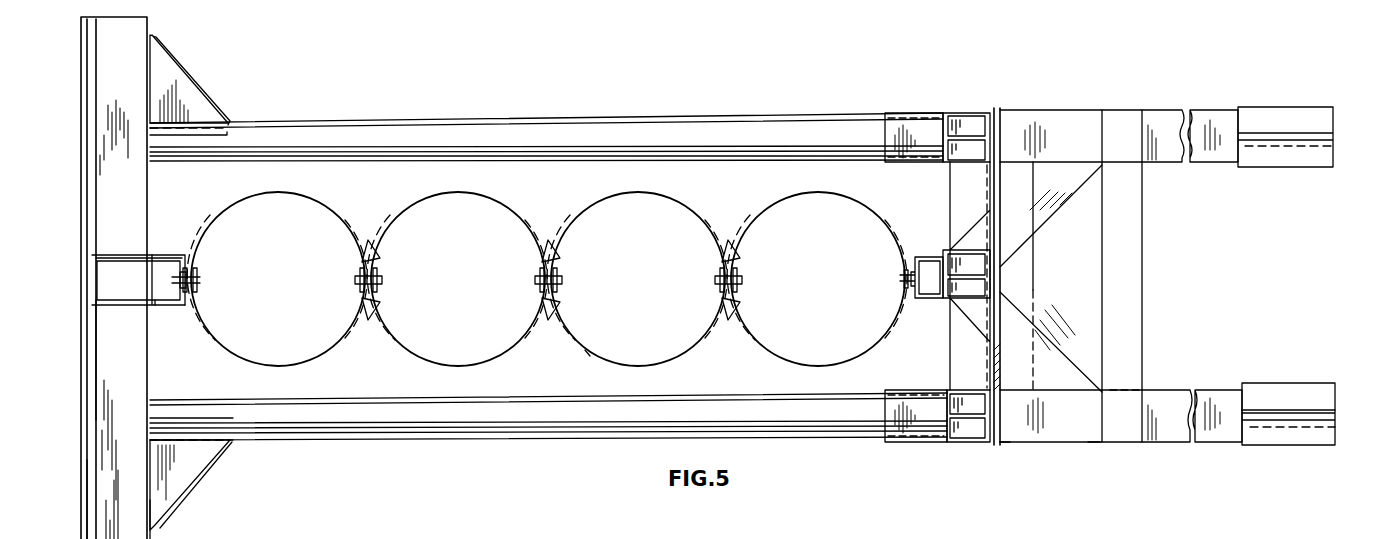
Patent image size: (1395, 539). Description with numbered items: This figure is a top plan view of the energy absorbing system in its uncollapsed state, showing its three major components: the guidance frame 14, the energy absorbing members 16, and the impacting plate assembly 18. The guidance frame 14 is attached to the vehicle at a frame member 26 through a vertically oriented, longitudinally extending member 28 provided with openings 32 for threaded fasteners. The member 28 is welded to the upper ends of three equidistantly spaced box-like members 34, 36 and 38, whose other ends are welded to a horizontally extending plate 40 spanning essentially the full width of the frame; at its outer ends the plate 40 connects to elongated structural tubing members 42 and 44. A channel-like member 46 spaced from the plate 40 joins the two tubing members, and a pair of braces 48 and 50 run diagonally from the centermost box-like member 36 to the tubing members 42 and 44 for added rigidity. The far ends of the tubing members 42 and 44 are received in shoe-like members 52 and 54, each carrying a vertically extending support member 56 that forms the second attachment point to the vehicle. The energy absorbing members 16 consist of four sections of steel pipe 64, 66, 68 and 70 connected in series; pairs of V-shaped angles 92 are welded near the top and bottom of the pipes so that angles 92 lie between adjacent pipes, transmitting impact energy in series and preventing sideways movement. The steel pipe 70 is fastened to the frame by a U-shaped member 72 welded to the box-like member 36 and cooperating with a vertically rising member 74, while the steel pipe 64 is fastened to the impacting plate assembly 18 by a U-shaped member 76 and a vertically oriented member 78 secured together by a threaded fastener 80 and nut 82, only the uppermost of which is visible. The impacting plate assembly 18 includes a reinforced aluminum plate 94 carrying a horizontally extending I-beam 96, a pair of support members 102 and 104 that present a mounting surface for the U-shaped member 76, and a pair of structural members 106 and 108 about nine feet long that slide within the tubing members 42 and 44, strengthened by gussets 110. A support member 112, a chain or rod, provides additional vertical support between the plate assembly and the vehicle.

The guidance frame 14 is at (1088, 440).
The energy absorbing members 16 is at (590, 352).
The impacting plate assembly 18 is at (86, 350).
The frame member 26 is at (688, 532).
The vertically oriented, longitudinally extending member 28 is at (1002, 442).
The openings 32 is at (993, 372).
The box-like member 34 is at (950, 425).
The centermost box-like member 36 is at (958, 310).
The box-like member 38 is at (943, 128).
The horizontally extending plate 40 is at (1030, 276).
The structural tubing member 42 is at (1059, 442).
The structural tubing member 44 is at (1072, 116).
The channel-like member 46 is at (1143, 280).
The brace 48 is at (1060, 345).
The brace 50 is at (1060, 203).
The shoe-like member 52 is at (1292, 445).
The shoe-like member 54 is at (1286, 112).
The vertically extending support member 56 is at (1320, 412).
The steel pipe 64 is at (322, 208).
The steel pipe 66 is at (500, 205).
The steel pipe 68 is at (684, 205).
The steel pipe 70 is at (873, 208).
The U-shaped member 72 is at (922, 298).
The vertically rising member 74 is at (926, 254).
The U-shaped member 76 is at (168, 300).
The vertically oriented member 78 is at (194, 270).
The threaded fastener 80 is at (175, 280).
The nut 82 is at (198, 282).
The V-shaped angles 92 is at (368, 238).
The reinforced plate 94 is at (87, 466).
The horizontally extending I-beam 96 is at (138, 400).
The support member 102 is at (126, 306).
The support member 104 is at (128, 258).
The structural member 106 is at (406, 427).
The structural member 108 is at (421, 132).
The gussets 110 is at (170, 78).
The support member 112 is at (268, 533).